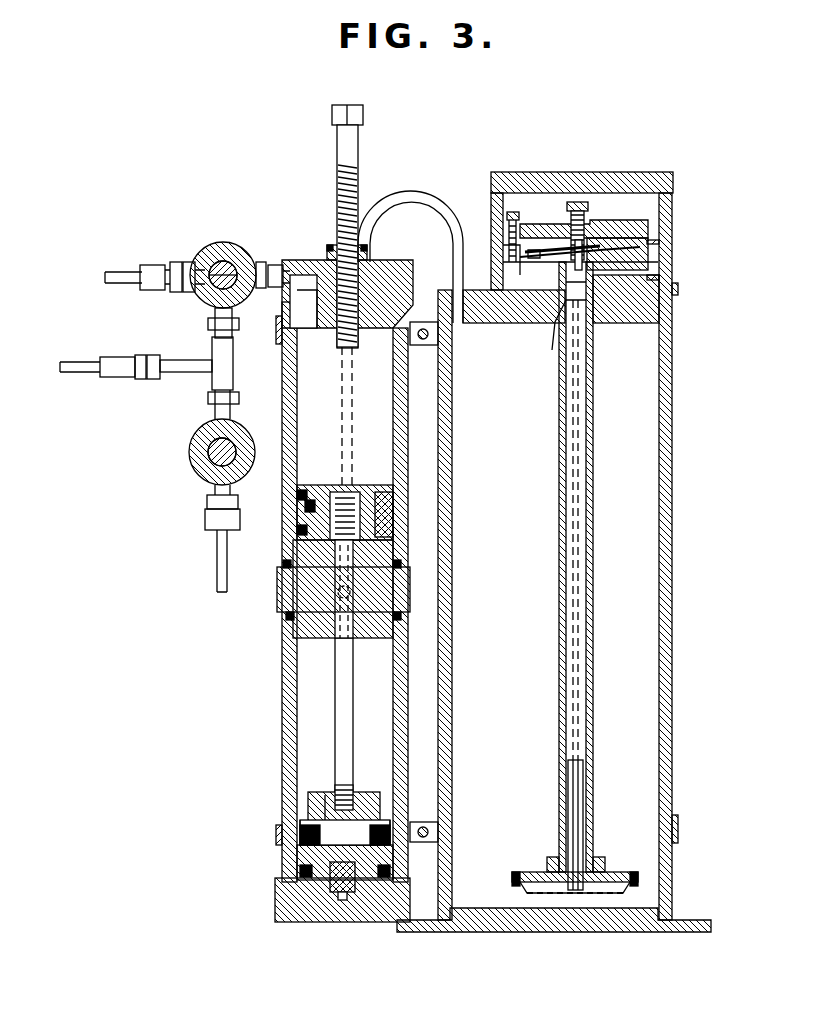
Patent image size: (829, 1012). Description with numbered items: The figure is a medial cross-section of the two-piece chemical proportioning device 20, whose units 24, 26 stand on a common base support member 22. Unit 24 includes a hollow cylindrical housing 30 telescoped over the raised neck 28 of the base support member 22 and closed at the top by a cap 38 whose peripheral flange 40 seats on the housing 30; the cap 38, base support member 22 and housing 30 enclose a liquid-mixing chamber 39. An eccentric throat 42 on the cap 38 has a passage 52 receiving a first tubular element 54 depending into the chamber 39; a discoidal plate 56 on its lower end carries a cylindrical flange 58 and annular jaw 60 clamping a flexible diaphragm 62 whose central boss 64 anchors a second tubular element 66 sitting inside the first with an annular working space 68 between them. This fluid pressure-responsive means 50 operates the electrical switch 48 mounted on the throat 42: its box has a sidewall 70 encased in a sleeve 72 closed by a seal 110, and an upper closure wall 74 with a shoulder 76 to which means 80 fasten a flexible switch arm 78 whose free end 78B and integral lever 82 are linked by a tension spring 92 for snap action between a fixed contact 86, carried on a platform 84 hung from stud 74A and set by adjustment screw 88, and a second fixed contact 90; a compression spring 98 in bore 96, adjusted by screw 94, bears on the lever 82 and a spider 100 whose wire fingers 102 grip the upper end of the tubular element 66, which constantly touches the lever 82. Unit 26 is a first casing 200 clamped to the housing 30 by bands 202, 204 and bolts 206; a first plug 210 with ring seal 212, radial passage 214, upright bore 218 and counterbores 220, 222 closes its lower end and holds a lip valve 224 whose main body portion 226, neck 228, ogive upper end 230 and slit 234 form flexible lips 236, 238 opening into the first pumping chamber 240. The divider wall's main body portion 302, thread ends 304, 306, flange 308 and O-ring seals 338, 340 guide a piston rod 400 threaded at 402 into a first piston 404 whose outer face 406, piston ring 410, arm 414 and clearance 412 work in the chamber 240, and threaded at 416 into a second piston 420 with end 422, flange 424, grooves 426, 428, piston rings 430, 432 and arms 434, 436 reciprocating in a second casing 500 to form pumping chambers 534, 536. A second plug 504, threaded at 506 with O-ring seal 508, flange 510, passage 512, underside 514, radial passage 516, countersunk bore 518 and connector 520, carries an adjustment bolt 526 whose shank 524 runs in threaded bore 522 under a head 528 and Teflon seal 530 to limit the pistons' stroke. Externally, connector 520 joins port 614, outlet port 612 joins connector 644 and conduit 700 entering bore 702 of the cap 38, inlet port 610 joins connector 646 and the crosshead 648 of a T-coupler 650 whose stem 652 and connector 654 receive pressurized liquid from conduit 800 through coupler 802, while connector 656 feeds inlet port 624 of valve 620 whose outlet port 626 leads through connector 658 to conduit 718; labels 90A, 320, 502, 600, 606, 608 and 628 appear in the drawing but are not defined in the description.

The chemical proportioning device 20 is at (279, 163).
The base support member 22 is at (574, 935).
The unit 24 is at (674, 428).
The unit 26 is at (256, 690).
The raised cylindrical neck 28 is at (460, 908).
The cylindrical housing 30 is at (672, 540).
The upper cylindrical cap 38 is at (517, 323).
The liquid-mixing chamber 39 is at (645, 585).
The peripheral flange 40 is at (679, 292).
The cylindrical throat 42 is at (662, 243).
The electrical switch 48 is at (618, 278).
The fluid pressure-responsive apparatus 50 is at (531, 823).
The coaxial passage 52 is at (594, 330).
The first tubular element 54 is at (594, 368).
The discoidal plate 56 is at (606, 870).
The cylindrical flange 58 is at (636, 886).
The annular jaw 60 is at (514, 887).
The flexible diaphragm 62 is at (552, 897).
The boss 64 is at (587, 850).
The second tubular element 66 is at (584, 780).
The annular working space 68 is at (580, 700).
The cylindrical sidewall 70 is at (673, 264).
The sleeve 72 is at (666, 230).
The upper end closure wall 74 is at (600, 222).
The cylindrical stud 74A is at (505, 262).
The shoulder 76 is at (630, 243).
The switch arm 78 is at (568, 232).
The free end of switch arm 78B is at (495, 210).
The connecting means 80 is at (618, 258).
The intermediate lever 82 is at (560, 262).
The flexible metallic platform 84 is at (520, 265).
The fixed switch contact 86 is at (534, 260).
The adjustment screw 88 is at (505, 250).
The second fixed switch contact 90 is at (520, 240).
The screw head 90A is at (500, 225).
The helicoidal tension spring 92 is at (555, 258).
The spring tension-adjustment screw 94 is at (590, 200).
The transverse bore 96 is at (600, 218).
The helicoidal compression spring 98 is at (622, 226).
The spider 100 is at (583, 259).
The wire fingers 102 is at (553, 330).
The seal 110 is at (565, 172).
The first casing 200 is at (274, 664).
The upper clamping band 202 is at (276, 335).
The lower clamping band 204 is at (287, 835).
The clamp bolts 206 is at (430, 335).
The first plug 210 is at (386, 922).
The ring seal 212 is at (280, 922).
The radial passage 214 is at (340, 900).
The upright bore 218 is at (356, 900).
The counterbore 220 is at (370, 905).
The second counterbore 222 is at (325, 898).
The lip valve 224 is at (380, 812).
The main body portion 226 is at (310, 922).
The neck 228 is at (322, 922).
The upper end of main body portion 230 is at (318, 795).
The diametric slit 234 is at (352, 785).
The flexible lip 236 is at (385, 800).
The flexible lip 238 is at (327, 792).
The first pumping chamber 240 is at (290, 725).
The main body portion of divider wall 302 is at (335, 590).
The lower thread end 304 is at (308, 638).
The upper thread end 306 is at (268, 609).
The circumferential flange 308 is at (277, 590).
The passage 320 is at (340, 578).
The upper O-ring seal 338 is at (360, 555).
The lower O-ring seal 340 is at (358, 640).
The piston rod 400 is at (348, 706).
The threaded connection 402 is at (350, 790).
The first piston 404 is at (299, 809).
The outer face of first piston 406 is at (297, 860).
The piston ring 410 is at (282, 838).
The clearance 412 is at (440, 800).
The outer annular arm 414 is at (300, 815).
The threaded connection 416 is at (328, 575).
The second piston 420 is at (393, 490).
The upper end of second piston 422 is at (326, 485).
The cylindrical flange 424 is at (300, 520).
The lower circumferential groove 426 is at (335, 510).
The upper circumferential groove 428 is at (336, 520).
The lower piston ring 430 is at (300, 530).
The upper piston ring 432 is at (305, 506).
The annular arm 434 is at (305, 545).
The annular arm 436 is at (297, 492).
The second casing 500 is at (282, 396).
The shoulder 502 is at (285, 567).
The second plug 504 is at (392, 262).
The threaded junction 506 is at (365, 328).
The O-ring seal 508 is at (405, 283).
The cylindrical flange 510 is at (410, 296).
The offset vertical passage 512 is at (312, 328).
The underside of second plug 514 is at (330, 328).
The radial passage 516 is at (302, 260).
The countersunk bore 518 is at (285, 258).
The connector 520 is at (235, 300).
The internally-threaded bore 522 is at (370, 290).
The threaded shank 524 is at (360, 175).
The adjustment bolt 526 is at (360, 150).
The wrench-receiving head 528 is at (363, 112).
The Teflon seal 530 is at (367, 252).
The pumping chamber 534 is at (393, 530).
The pumping chamber 536 is at (375, 424).
The valve 600 is at (238, 242).
The valve port 606 is at (215, 292).
The valve body 608 is at (213, 247).
The inlet port 610 is at (223, 300).
The outlet port 612 is at (205, 288).
The port 614 is at (260, 262).
The valve 620 is at (186, 465).
The inlet port 624 is at (192, 445).
The outlet port 626 is at (212, 490).
The valve ball 628 is at (205, 470).
The connector 644 is at (176, 262).
The connector 646 is at (232, 318).
The crosshead 648 is at (233, 366).
The T-coupler 650 is at (206, 376).
The stem 652 is at (155, 380).
The connector 654 is at (142, 380).
The connector 656 is at (200, 425).
The connector 658 is at (205, 515).
The tubular conduit 700 is at (448, 210).
The bore 702 is at (452, 326).
The conduit 718 is at (217, 570).
The conduit 800 is at (90, 372).
The coupler 802 is at (122, 377).